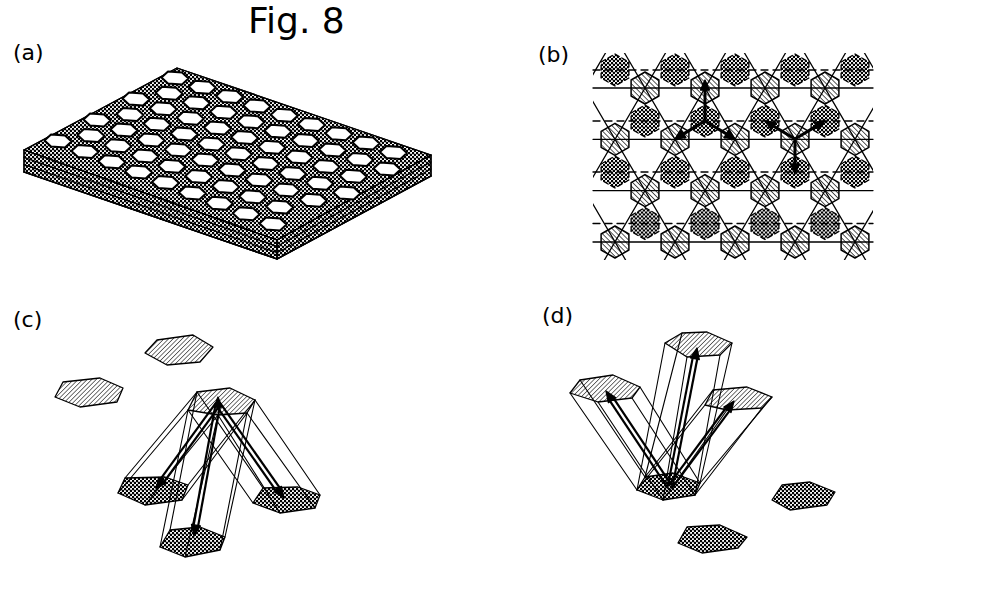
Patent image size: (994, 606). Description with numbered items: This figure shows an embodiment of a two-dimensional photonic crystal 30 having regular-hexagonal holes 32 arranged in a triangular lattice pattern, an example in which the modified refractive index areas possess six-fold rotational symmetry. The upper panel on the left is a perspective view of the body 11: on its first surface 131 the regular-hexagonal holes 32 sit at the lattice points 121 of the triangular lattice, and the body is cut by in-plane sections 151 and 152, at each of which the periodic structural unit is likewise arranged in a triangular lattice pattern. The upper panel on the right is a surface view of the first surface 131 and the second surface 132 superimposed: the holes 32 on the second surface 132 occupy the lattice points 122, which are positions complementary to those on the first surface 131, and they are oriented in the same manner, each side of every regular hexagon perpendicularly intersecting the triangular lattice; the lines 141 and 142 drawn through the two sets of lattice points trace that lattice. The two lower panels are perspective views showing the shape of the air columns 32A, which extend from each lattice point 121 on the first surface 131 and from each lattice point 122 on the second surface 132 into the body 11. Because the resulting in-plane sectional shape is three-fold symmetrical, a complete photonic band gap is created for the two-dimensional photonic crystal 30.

The two-dimensional photonic crystal 30 is at (335, 270).
The body 11 is at (433, 157).
The regular-hexagonal holes 32 is at (304, 134).
The first surface 131 is at (411, 157).
The second surface 132 is at (167, 230).
The in-plane section 151 is at (333, 218).
The in-plane section 152 is at (337, 230).
The lattice points 121 is at (602, 167).
The lattice points 122 is at (602, 132).
The first line 141 is at (602, 194).
The second line 142 is at (600, 222).
The air columns 32A is at (285, 438).